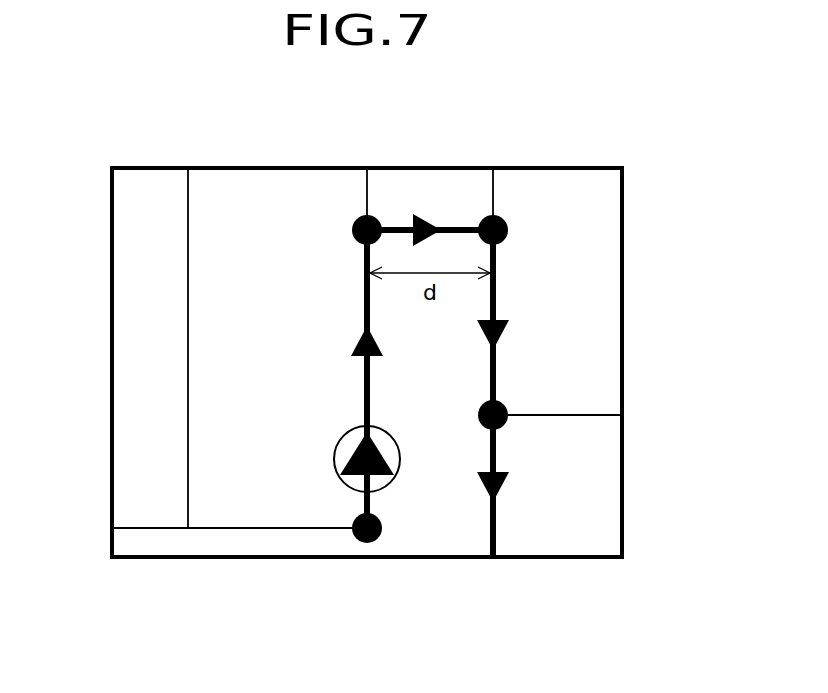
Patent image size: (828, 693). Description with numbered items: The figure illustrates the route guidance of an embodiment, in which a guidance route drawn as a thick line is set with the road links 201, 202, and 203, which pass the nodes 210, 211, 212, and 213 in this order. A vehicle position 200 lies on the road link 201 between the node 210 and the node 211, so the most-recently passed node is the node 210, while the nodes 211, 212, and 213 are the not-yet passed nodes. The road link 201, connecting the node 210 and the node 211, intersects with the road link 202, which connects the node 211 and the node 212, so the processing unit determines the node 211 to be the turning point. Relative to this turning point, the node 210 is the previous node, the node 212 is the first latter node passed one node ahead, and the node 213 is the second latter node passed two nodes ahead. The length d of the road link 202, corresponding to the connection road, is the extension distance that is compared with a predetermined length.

The vehicle position 200 is at (336, 456).
The road link 201 is at (362, 297).
The road link 202 is at (402, 226).
The road link 203 is at (498, 258).
The node 210 is at (378, 540).
The node 211 is at (353, 228).
The node 212 is at (504, 222).
The node 213 is at (505, 430).